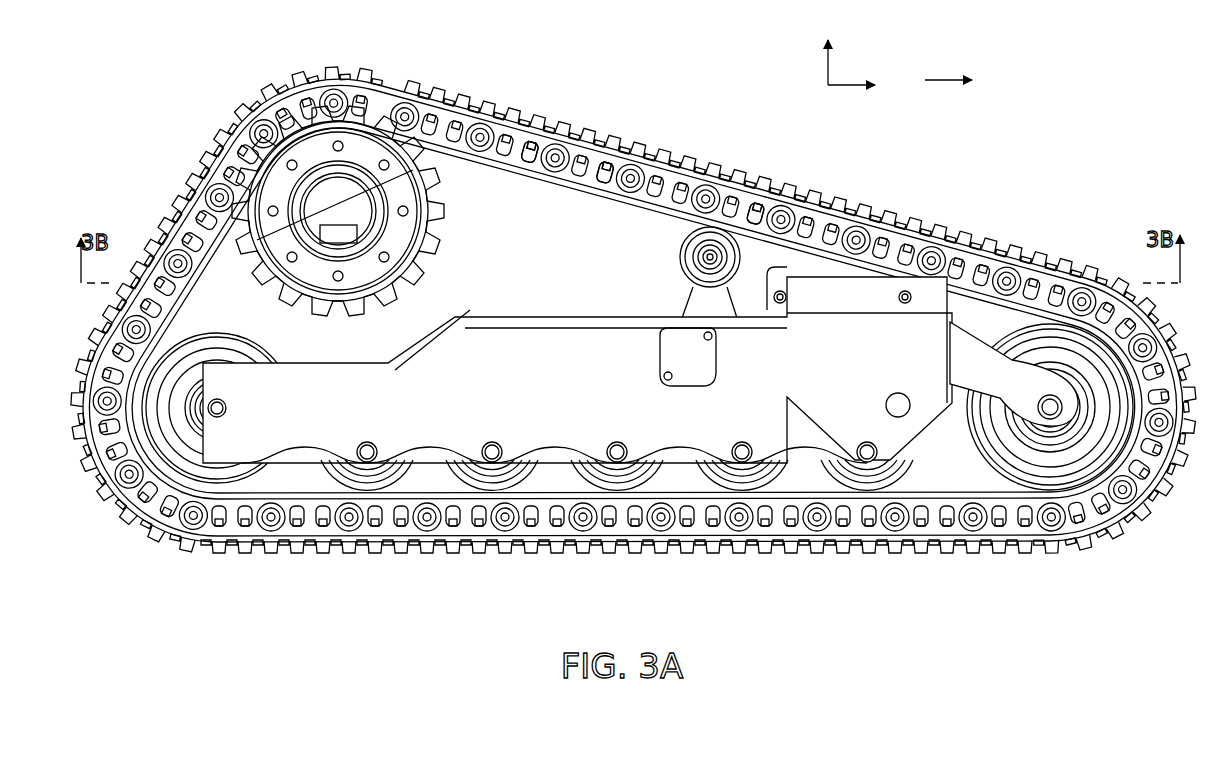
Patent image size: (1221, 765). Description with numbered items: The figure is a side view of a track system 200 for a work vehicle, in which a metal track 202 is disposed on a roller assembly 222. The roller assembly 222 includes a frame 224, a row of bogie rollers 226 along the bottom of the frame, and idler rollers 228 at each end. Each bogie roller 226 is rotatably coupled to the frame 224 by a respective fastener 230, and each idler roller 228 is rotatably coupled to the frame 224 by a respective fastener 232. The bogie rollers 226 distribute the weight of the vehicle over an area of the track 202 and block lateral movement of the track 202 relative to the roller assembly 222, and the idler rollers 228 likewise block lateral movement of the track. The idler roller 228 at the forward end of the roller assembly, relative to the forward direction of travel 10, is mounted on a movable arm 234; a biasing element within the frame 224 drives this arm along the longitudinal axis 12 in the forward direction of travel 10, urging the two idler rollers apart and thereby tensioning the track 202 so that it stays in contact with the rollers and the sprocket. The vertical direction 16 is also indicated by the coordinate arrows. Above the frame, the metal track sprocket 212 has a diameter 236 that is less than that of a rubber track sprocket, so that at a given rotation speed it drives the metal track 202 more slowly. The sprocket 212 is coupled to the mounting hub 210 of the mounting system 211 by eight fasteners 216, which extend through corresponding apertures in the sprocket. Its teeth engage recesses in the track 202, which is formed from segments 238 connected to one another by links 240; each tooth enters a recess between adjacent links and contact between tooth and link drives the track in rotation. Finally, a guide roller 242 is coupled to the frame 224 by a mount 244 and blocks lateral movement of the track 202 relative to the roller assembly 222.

The forward direction of travel 10 is at (946, 80).
The longitudinal axis 12 is at (845, 88).
The vertical direction 16 is at (826, 82).
The track system 200 is at (612, 60).
The metal track 202 is at (618, 112).
The mounting hub 210 is at (234, 122).
The mounting system 211 is at (363, 306).
The metal track sprocket 212 is at (408, 252).
The fasteners 216 is at (311, 84).
The roller assembly 222 is at (622, 296).
The frame 224 is at (538, 338).
The bogie rollers 226 is at (384, 492).
The idler rollers 228 is at (176, 468).
The fastener 230 is at (368, 443).
The fastener 232 is at (225, 410).
The movable arm 234 is at (987, 330).
The diameter 236 is at (405, 210).
The segments 238 is at (478, 106).
The links 240 is at (542, 181).
The guide roller 242 is at (773, 192).
The mount 244 is at (696, 304).